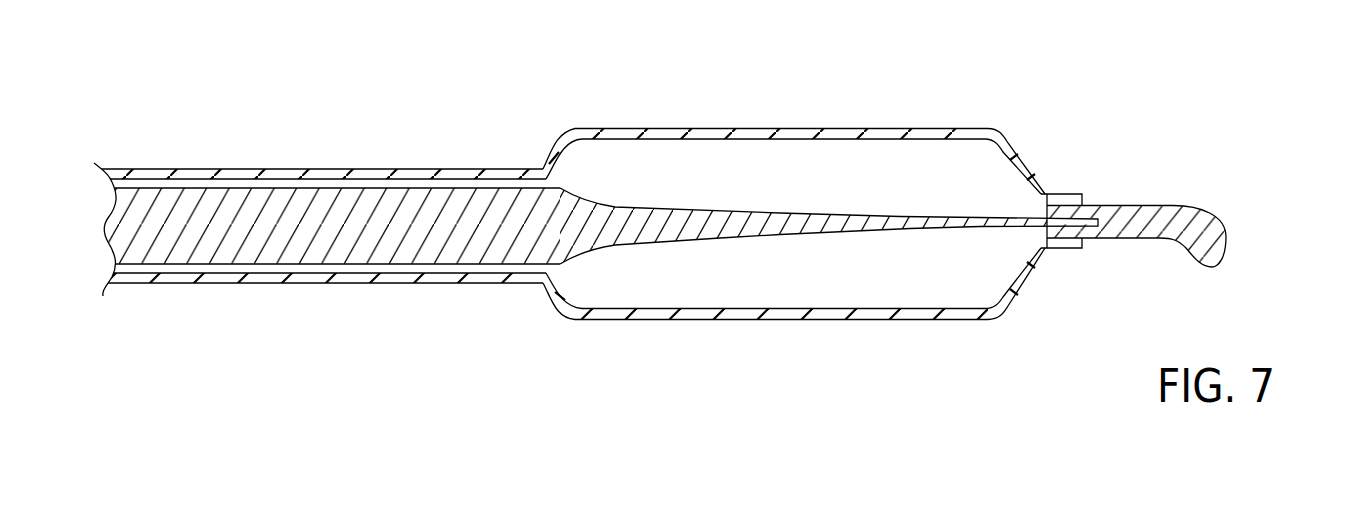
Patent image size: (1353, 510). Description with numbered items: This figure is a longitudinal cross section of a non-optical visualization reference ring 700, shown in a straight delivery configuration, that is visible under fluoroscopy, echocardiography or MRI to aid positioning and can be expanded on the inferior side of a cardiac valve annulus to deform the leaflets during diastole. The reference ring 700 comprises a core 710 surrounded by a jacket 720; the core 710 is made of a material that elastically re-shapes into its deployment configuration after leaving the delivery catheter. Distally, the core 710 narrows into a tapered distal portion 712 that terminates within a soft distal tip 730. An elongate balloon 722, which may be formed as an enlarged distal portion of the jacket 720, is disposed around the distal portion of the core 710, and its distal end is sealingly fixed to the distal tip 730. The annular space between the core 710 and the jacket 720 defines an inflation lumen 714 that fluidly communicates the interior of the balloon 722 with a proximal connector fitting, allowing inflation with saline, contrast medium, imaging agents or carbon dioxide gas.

The non-optical visualization reference ring 700 is at (1040, 414).
The core 710 is at (325, 240).
The tapered distal portion 712 is at (760, 220).
The inflation lumen 714 is at (455, 272).
The jacket 720 is at (398, 170).
The elongate balloon 722 is at (693, 132).
The soft distal tip 730 is at (1213, 241).